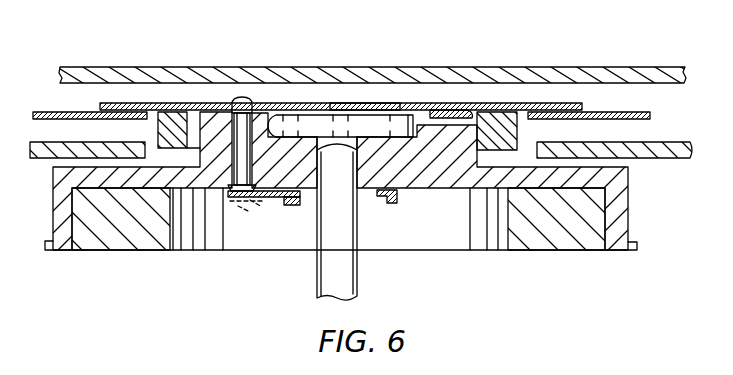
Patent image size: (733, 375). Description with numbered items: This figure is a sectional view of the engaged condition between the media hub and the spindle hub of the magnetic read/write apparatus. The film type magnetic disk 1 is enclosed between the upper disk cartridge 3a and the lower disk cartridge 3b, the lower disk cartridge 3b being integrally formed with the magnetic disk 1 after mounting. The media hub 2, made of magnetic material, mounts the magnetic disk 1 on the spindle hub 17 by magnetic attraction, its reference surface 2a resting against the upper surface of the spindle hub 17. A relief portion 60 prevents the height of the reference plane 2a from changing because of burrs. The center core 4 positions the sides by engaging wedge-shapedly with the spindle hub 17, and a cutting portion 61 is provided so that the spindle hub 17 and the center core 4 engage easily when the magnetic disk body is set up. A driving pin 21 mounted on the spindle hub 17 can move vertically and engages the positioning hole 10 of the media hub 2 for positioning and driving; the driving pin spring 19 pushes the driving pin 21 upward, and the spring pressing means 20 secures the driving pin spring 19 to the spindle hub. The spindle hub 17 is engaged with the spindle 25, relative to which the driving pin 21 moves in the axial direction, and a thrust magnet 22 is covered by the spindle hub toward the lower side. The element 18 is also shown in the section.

The magnetic disk 1 is at (649, 114).
The media hub 2 is at (561, 103).
The reference surface 2a is at (362, 103).
The upper disk cartridge 3a is at (647, 72).
The lower disk cartridge 3b is at (663, 155).
The center core 4 is at (173, 122).
The positioning hole 10 is at (230, 98).
The spindle hub 17 is at (438, 118).
The support plate 18 is at (297, 123).
The driving pin spring 19 is at (277, 203).
The spring pressing means 20 is at (398, 202).
The driving pin 21 is at (243, 97).
The thrust magnet 22 is at (98, 230).
The spindle 25 is at (357, 284).
The relief portion 60 is at (433, 132).
The cutting portion 61 is at (205, 123).